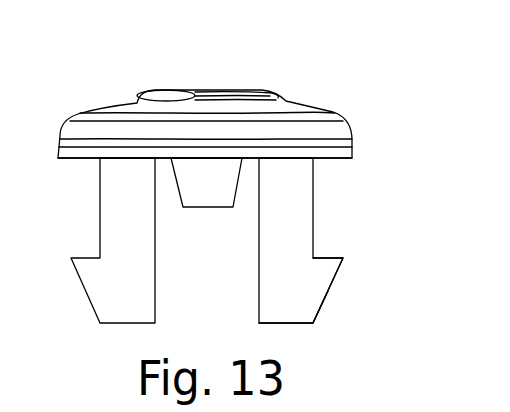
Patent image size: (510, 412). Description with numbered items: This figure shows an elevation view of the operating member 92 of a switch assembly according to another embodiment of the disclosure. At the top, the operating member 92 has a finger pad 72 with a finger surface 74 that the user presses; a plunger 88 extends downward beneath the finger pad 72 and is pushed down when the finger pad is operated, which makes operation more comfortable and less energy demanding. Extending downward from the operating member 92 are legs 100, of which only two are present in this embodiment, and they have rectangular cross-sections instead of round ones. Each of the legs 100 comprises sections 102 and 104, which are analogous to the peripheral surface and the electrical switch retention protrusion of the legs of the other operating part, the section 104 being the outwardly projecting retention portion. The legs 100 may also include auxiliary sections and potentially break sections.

The operating member 92 is at (361, 100).
The finger pad 72 is at (245, 93).
The finger surface 74 is at (215, 89).
The plunger 88 is at (193, 190).
The leg section 102 is at (313, 193).
The leg section 104 is at (322, 283).
The legs 100 is at (338, 318).